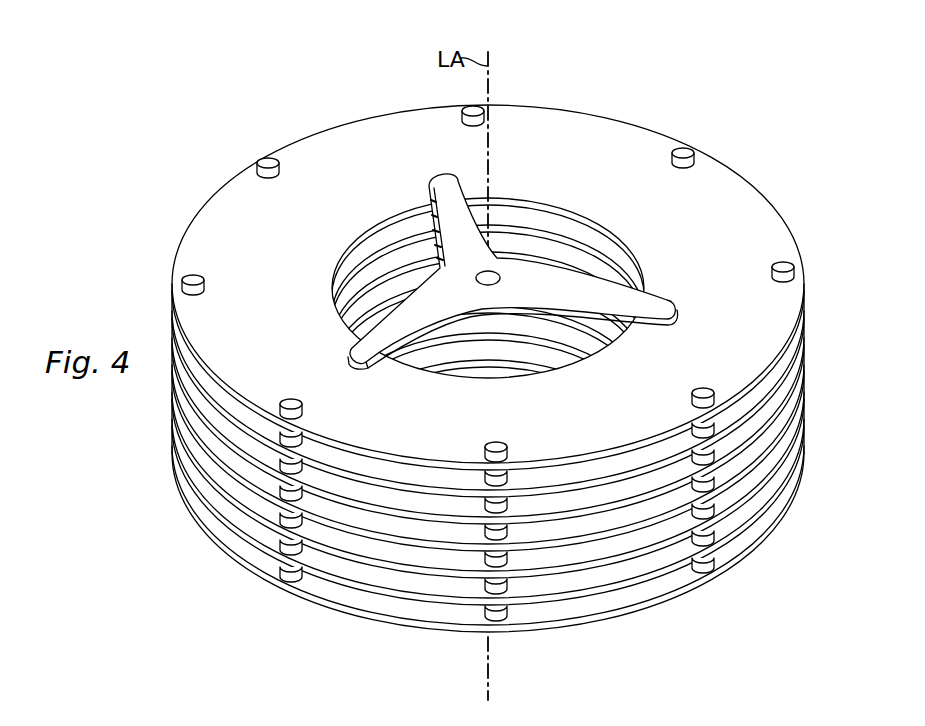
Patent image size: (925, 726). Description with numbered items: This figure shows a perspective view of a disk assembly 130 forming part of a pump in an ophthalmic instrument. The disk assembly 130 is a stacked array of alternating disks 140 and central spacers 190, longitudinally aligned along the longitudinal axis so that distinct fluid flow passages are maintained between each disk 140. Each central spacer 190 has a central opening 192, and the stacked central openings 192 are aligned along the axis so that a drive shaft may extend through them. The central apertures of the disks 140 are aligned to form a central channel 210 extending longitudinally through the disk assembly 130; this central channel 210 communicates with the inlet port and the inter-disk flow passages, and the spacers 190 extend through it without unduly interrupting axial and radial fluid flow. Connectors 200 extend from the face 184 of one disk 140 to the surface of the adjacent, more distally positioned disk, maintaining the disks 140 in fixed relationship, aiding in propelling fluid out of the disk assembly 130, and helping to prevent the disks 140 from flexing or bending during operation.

The disk assembly 130 is at (641, 70).
The disk 140 is at (728, 184).
The face 184 is at (451, 288).
The central spacer 190 is at (657, 306).
The central opening 192 is at (492, 276).
The connector 200 is at (268, 161).
The central channel 210 is at (390, 258).